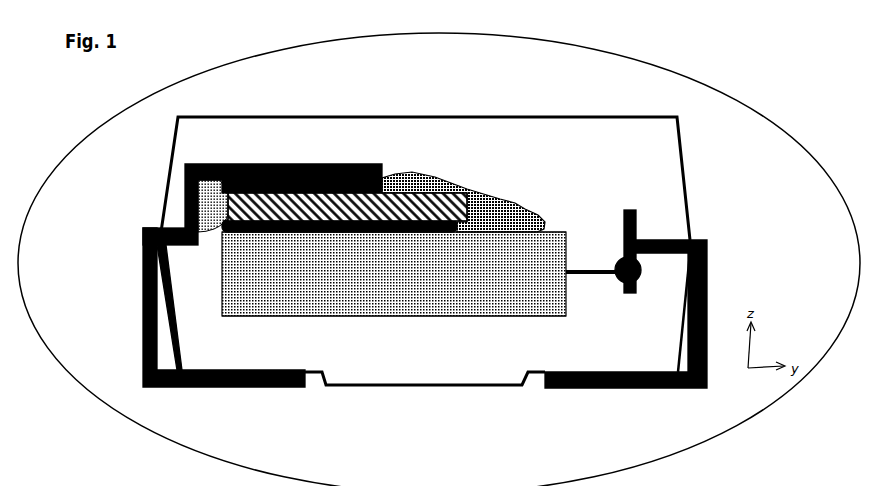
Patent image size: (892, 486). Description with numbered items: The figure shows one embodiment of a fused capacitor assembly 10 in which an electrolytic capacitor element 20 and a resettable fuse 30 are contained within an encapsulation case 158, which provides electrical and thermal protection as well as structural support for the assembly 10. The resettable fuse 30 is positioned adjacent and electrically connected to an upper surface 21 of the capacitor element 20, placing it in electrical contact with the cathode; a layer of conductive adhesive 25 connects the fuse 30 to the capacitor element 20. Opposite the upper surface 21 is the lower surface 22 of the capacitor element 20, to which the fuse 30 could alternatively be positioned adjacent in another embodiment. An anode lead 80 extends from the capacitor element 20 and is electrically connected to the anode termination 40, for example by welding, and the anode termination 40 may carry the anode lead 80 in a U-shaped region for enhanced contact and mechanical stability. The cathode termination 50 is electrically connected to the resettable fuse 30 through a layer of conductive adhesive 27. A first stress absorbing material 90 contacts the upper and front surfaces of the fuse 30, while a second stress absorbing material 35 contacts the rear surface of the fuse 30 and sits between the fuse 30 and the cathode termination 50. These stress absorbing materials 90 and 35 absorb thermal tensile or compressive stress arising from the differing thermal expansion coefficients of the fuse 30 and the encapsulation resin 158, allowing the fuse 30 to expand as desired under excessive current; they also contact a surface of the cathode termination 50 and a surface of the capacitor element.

The capacitor assembly 10 is at (698, 87).
The electrolytic capacitor element 20 is at (522, 301).
The upper surface 21 is at (553, 231).
The lower surface 22 is at (380, 316).
The layer of conductive adhesive 25 is at (285, 226).
The layer of conductive adhesive 27 is at (345, 165).
The resettable fuse 30 is at (255, 192).
The second stress absorbing material 35 is at (185, 198).
The anode termination 40 is at (707, 280).
The cathode termination 50 is at (143, 283).
The anode lead 80 is at (606, 277).
The first stress absorbing material 90 is at (423, 180).
The encapsulation case 158 is at (520, 167).